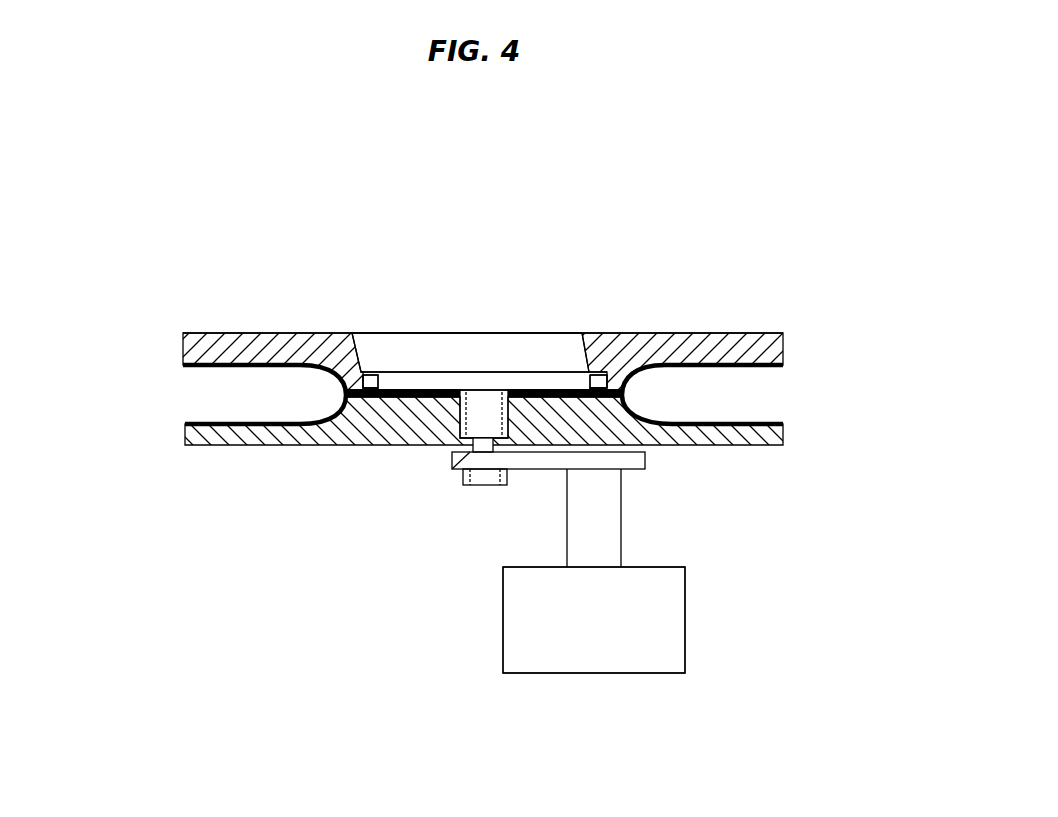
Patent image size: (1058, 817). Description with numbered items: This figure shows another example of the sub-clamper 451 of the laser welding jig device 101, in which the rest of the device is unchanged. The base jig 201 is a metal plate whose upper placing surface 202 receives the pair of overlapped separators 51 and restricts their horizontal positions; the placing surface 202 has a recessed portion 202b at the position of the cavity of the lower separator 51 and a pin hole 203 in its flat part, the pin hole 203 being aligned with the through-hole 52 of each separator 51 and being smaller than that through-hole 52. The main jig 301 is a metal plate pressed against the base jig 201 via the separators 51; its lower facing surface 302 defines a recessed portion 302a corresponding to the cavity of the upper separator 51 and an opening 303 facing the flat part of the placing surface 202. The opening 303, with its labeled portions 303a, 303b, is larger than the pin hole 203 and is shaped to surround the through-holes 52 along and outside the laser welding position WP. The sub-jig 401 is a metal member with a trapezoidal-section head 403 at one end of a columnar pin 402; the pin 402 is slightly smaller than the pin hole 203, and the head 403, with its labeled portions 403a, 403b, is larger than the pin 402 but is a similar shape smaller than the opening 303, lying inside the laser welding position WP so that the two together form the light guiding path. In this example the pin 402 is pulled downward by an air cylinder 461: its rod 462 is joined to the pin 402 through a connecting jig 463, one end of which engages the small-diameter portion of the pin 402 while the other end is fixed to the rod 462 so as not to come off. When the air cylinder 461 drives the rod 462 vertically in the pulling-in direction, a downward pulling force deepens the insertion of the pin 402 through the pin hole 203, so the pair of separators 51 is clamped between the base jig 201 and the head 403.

The laser welding jig device 101 is at (701, 169).
The base jig 201 is at (786, 432).
The placing surface 202 is at (217, 421).
The recessed portion 202b is at (200, 425).
The pin hole 203 is at (473, 427).
The main jig 301 is at (790, 350).
The facing surface 302 is at (205, 376).
The recessed portion 302a is at (243, 383).
The opening 303 is at (608, 372).
The ring member inner portion 303a is at (362, 374).
The ring member outer portion 303b is at (368, 374).
The sub-jig 401 is at (422, 288).
The pin 402 is at (483, 388).
The head 403 is at (543, 333).
The ring member inner portion 403a is at (593, 375).
The ring member outer portion 403b is at (612, 378).
The sub-clamper 451 is at (384, 672).
The air cylinder 461 is at (688, 615).
The rod 462 is at (623, 522).
The connecting jig 463 is at (532, 470).
The separator 51 is at (760, 370).
The through-hole 52 is at (463, 418).
The laser welding position WP is at (377, 374).